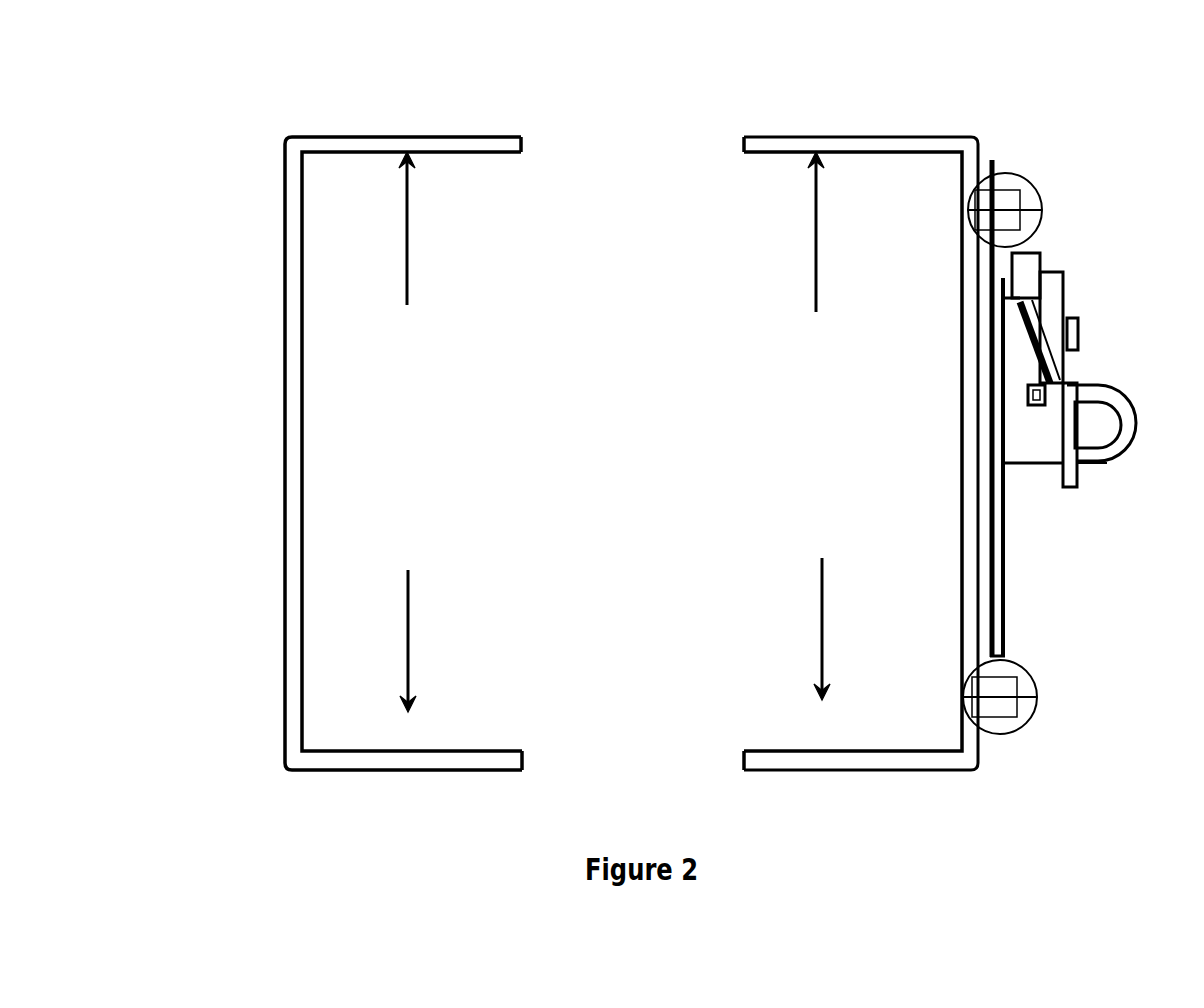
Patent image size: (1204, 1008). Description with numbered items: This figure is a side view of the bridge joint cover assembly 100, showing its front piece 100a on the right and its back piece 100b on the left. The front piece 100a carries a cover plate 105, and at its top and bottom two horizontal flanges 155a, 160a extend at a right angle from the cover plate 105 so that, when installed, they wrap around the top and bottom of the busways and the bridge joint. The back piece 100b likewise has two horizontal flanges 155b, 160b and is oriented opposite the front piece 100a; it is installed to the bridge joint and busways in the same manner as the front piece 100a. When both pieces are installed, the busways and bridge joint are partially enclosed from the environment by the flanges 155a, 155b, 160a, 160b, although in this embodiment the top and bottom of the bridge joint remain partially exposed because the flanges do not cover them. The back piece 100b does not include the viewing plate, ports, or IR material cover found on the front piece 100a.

The bridge joint cover assembly 100 is at (312, 106).
The front piece 100a is at (1097, 154).
The back piece 100b is at (260, 316).
The cover plate 105 is at (1005, 563).
The flange 155a is at (823, 256).
The flange 155b is at (417, 253).
The flange 160a is at (826, 607).
The flange 160b is at (415, 618).